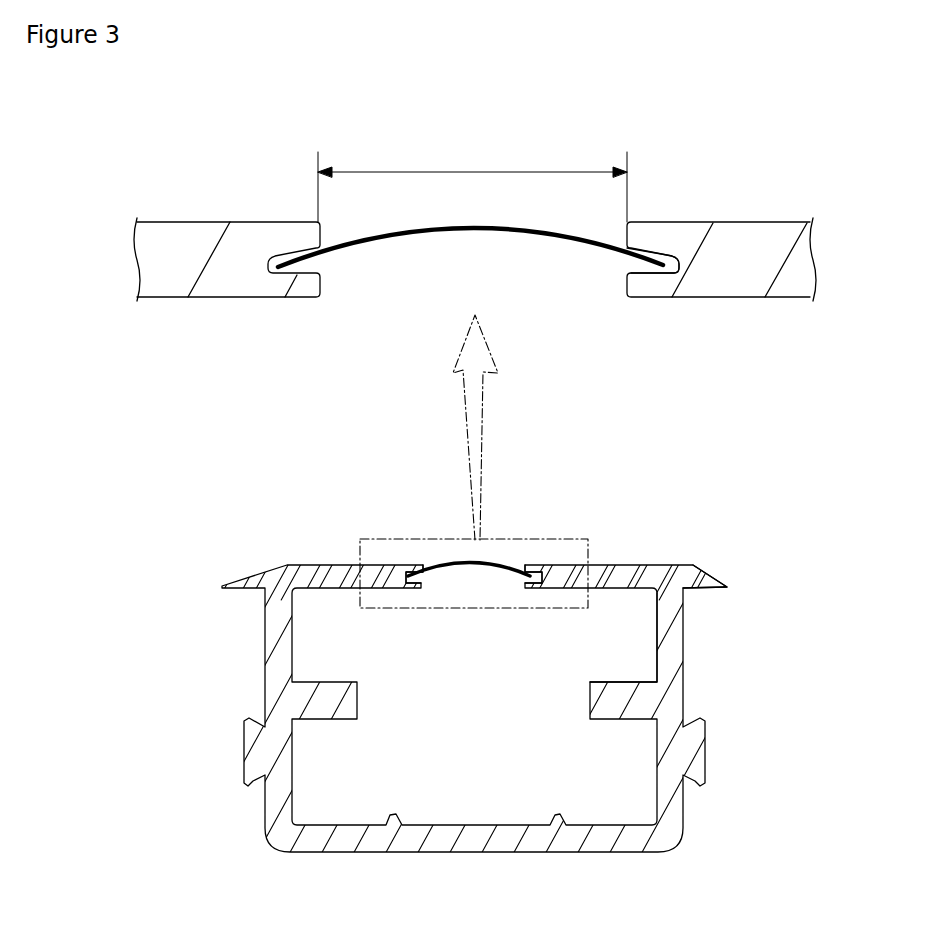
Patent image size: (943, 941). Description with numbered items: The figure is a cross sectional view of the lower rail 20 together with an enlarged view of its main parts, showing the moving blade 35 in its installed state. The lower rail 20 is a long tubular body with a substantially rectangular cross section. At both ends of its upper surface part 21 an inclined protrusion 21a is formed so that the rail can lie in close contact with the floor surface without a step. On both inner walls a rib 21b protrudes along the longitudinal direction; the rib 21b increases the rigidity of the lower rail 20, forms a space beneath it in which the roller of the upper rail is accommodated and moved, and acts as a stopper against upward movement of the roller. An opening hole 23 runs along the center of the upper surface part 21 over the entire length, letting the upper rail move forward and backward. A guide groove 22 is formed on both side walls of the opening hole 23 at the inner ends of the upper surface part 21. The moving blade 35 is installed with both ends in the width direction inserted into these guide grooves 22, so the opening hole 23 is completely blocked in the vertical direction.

The lower rail 20 is at (672, 835).
The upper surface part 21 is at (757, 238).
The inclined protrusion 21a is at (705, 578).
The rib 21b is at (581, 672).
The guide groove 22 is at (676, 278).
The opening hole 23 is at (445, 580).
The moving blade 35 is at (573, 237).